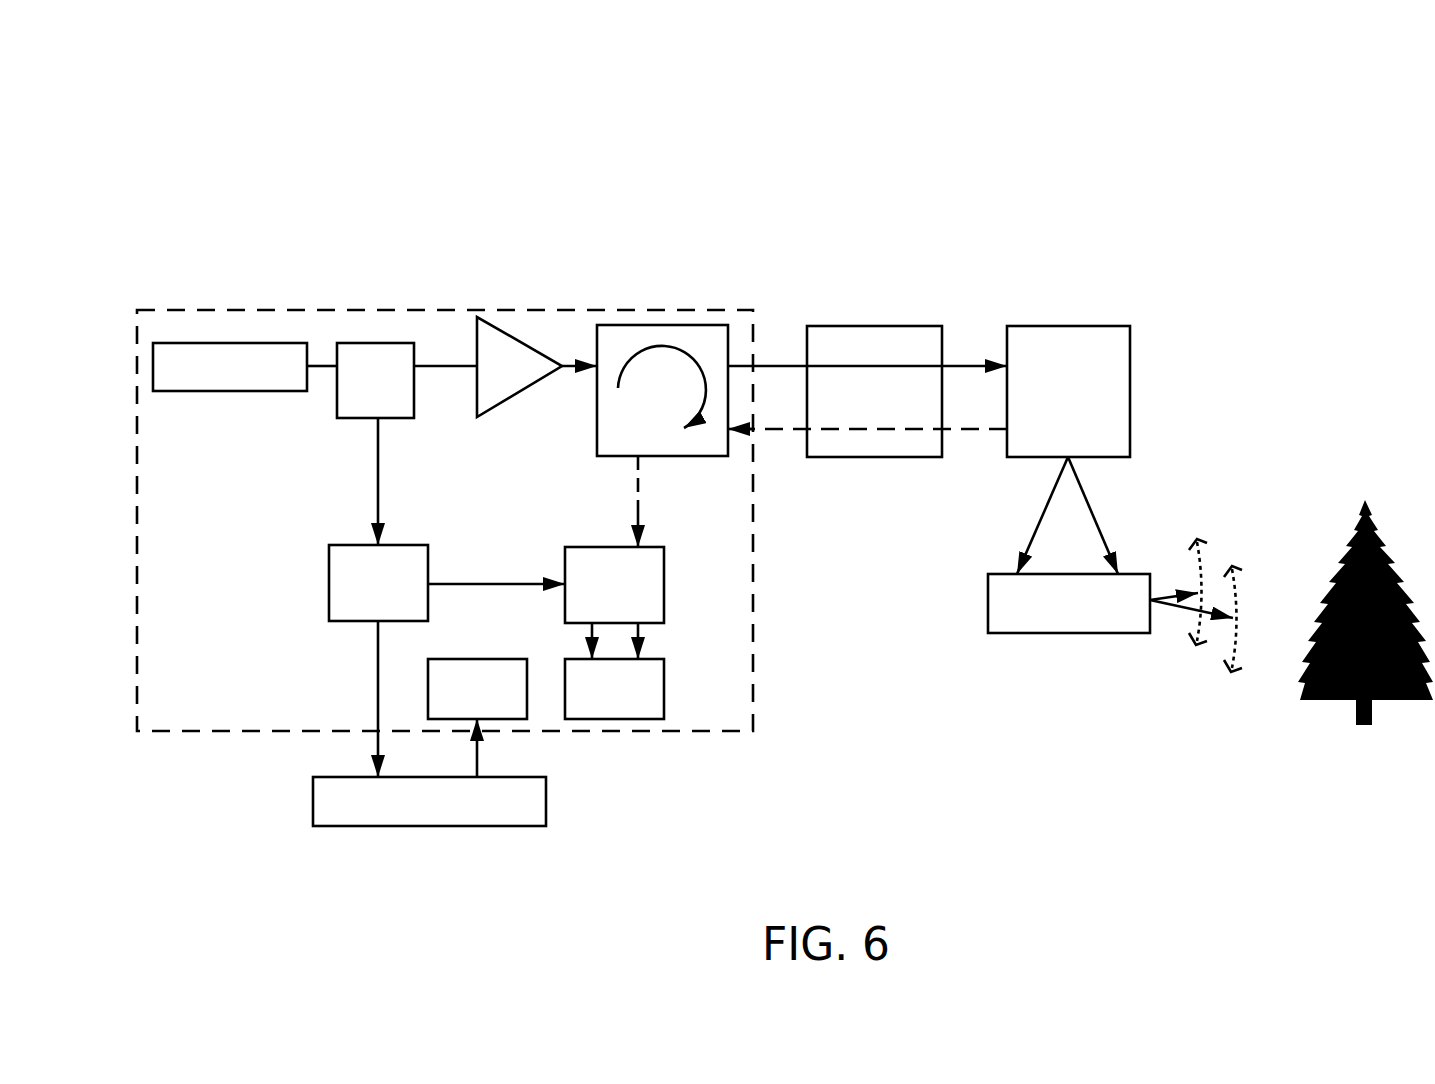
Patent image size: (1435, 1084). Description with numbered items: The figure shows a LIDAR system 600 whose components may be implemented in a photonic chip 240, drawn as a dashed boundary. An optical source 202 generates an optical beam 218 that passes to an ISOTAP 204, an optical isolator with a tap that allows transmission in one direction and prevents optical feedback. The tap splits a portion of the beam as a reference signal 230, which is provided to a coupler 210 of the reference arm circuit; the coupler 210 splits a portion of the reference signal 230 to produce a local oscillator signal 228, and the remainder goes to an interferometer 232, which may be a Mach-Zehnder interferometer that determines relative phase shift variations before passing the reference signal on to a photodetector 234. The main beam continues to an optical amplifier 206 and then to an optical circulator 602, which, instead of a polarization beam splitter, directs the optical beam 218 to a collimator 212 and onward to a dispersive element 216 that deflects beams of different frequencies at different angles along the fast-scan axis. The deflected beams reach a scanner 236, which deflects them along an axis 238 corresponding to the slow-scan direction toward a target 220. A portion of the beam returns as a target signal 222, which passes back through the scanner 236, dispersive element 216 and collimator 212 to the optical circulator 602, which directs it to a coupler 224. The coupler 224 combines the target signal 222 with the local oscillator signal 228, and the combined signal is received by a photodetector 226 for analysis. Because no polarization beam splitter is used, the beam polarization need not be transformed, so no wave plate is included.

The LIDAR system 600 is at (190, 98).
The photonic chip 240 is at (445, 520).
The optical source 202 is at (275, 338).
The ISOTAP 204 is at (335, 410).
The optical amplifier 206 is at (470, 313).
The optical circulator 602 is at (623, 325).
The collimator 212 is at (878, 326).
The dispersive element 216 is at (1057, 326).
The reference signal 230 is at (374, 489).
The coupler 210 is at (328, 578).
The local oscillator signal 228 is at (540, 582).
The target signal 222 is at (644, 493).
The coupler 224 is at (666, 588).
The photodetector 226 is at (666, 688).
The photodetector 234 is at (529, 708).
The interferometer 232 is at (429, 772).
The optical beam 218 is at (1035, 515).
The scanner 236 is at (1110, 603).
The axis 238 is at (1228, 676).
The target 220 is at (1353, 707).